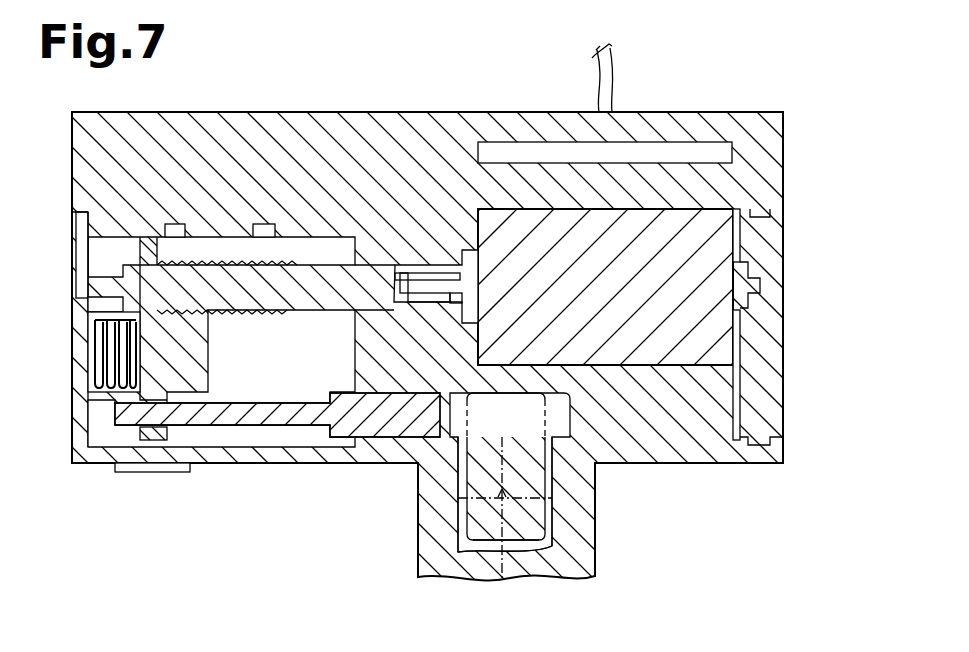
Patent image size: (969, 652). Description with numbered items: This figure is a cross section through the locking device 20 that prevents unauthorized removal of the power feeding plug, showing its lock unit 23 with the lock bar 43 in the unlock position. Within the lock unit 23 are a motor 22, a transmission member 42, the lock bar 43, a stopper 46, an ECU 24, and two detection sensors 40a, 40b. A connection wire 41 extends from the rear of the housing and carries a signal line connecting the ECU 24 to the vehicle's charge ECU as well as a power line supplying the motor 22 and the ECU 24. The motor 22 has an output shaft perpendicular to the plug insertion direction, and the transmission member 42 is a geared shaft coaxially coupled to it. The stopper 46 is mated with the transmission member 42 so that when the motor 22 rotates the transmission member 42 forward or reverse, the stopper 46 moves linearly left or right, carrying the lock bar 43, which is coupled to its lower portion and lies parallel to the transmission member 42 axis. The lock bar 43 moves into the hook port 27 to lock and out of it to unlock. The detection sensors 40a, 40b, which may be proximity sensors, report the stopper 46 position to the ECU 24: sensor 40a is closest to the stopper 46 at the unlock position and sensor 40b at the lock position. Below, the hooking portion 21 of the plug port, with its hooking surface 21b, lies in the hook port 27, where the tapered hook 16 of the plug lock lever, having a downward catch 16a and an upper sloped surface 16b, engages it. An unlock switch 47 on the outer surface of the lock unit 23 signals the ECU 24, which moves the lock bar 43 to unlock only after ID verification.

The locking device 20 is at (784, 158).
The ECU 24 is at (700, 152).
The connection wire 41 is at (617, 66).
The motor 22 is at (674, 350).
The lock unit 23 is at (699, 452).
The transmission member 42 is at (322, 310).
The stopper 46 is at (135, 250).
The detection sensor 40a is at (172, 223).
The detection sensor 40b is at (263, 223).
The lock bar 43 is at (337, 436).
The unlock switch 47 is at (150, 474).
The upper sloped surface 16b is at (527, 433).
The hook 16 is at (466, 522).
The catch 16a is at (478, 548).
The hooking portion 21 is at (548, 522).
The hooking surface 21b is at (510, 550).
The hook port 27 is at (550, 550).